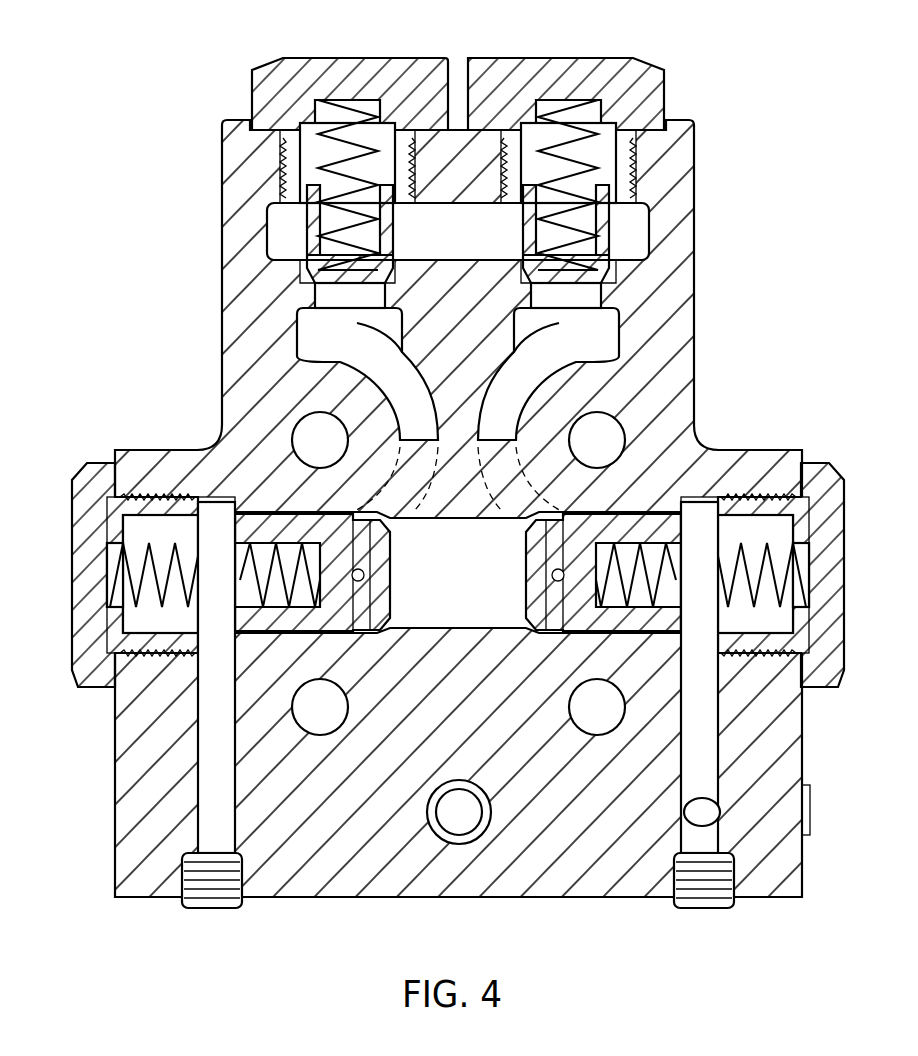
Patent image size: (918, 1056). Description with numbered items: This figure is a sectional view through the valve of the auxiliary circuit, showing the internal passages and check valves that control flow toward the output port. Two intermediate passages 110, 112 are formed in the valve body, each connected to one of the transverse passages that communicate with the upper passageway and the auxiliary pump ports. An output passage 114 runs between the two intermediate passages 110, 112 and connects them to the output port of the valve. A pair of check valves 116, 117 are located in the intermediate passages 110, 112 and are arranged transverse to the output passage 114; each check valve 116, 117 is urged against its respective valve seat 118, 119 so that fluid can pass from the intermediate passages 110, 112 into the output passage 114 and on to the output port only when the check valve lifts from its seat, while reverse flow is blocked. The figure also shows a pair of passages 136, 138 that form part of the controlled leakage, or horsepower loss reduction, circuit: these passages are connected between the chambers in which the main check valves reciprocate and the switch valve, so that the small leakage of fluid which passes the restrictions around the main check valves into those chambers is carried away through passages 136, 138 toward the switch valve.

The intermediate passage 110 is at (550, 373).
The intermediate passage 112 is at (360, 370).
The output passage 114 is at (457, 213).
The check valve 116 is at (613, 220).
The check valve 117 is at (300, 218).
The valve seat 118 is at (613, 270).
The valve seat 119 is at (300, 268).
The passage 136 is at (720, 778).
The passage 138 is at (200, 785).